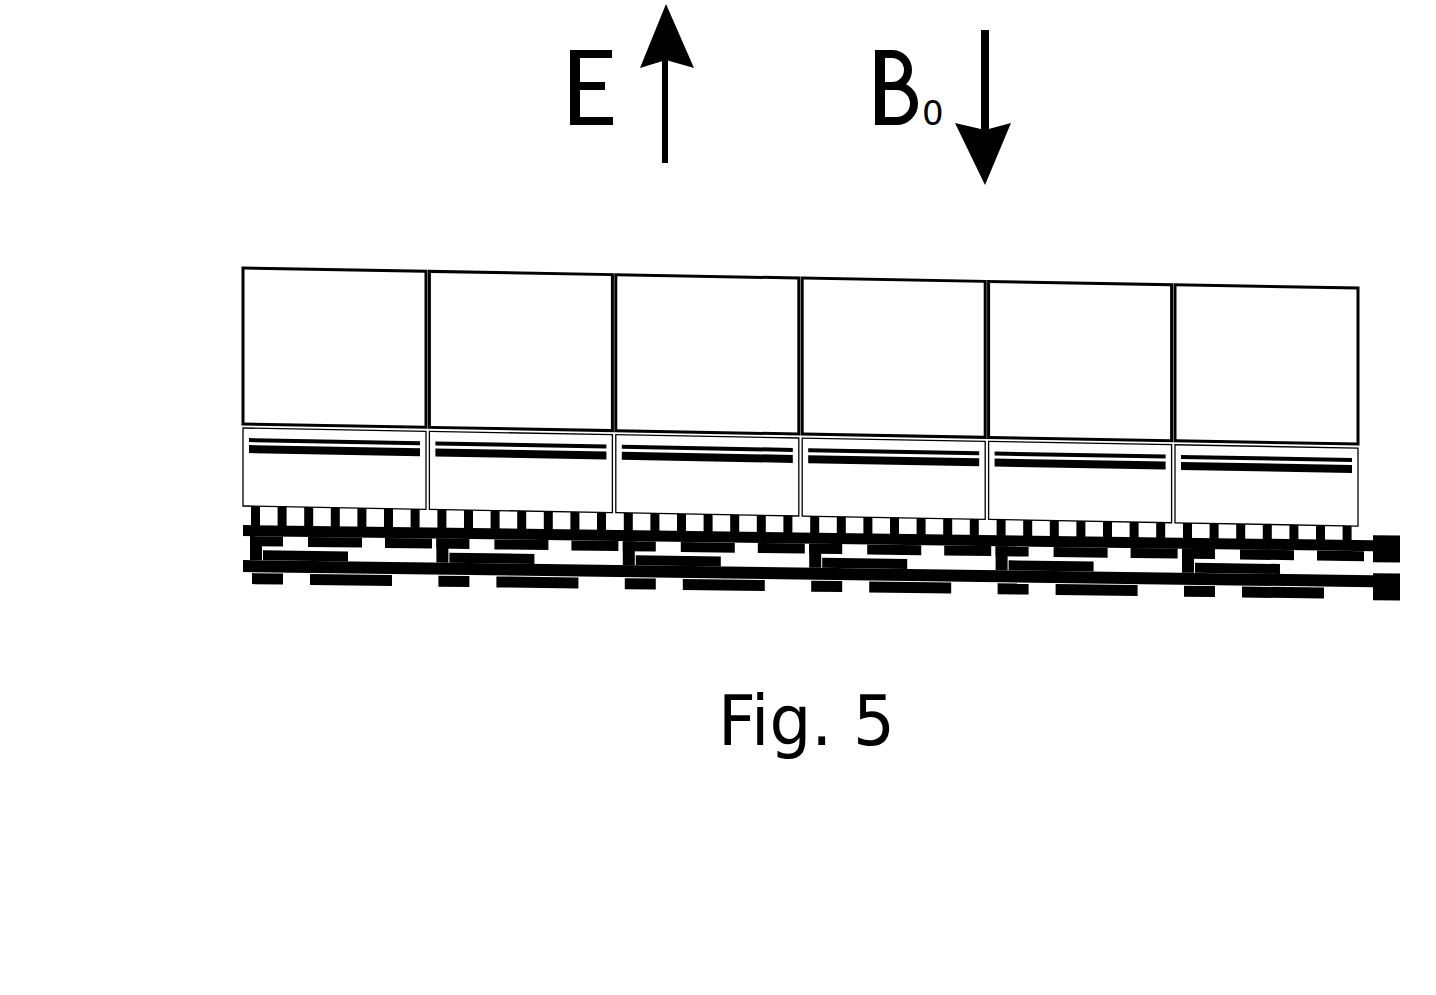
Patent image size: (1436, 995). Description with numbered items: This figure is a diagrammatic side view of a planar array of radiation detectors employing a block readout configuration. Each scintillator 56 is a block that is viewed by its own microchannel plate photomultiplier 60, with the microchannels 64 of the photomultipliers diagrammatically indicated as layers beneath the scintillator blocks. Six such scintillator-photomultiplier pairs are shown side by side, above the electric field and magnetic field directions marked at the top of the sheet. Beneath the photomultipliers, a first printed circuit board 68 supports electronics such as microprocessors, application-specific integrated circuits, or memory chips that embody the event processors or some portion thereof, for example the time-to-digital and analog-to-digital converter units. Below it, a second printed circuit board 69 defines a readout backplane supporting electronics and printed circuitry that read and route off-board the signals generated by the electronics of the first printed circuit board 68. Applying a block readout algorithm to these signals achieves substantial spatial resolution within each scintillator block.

The scintillator 56 is at (700, 337).
The microchannel plate photomultiplier 60 is at (677, 483).
The microchannels 64 is at (228, 434).
The first printed circuit board 68 is at (242, 528).
The second printed circuit board 69 is at (267, 570).